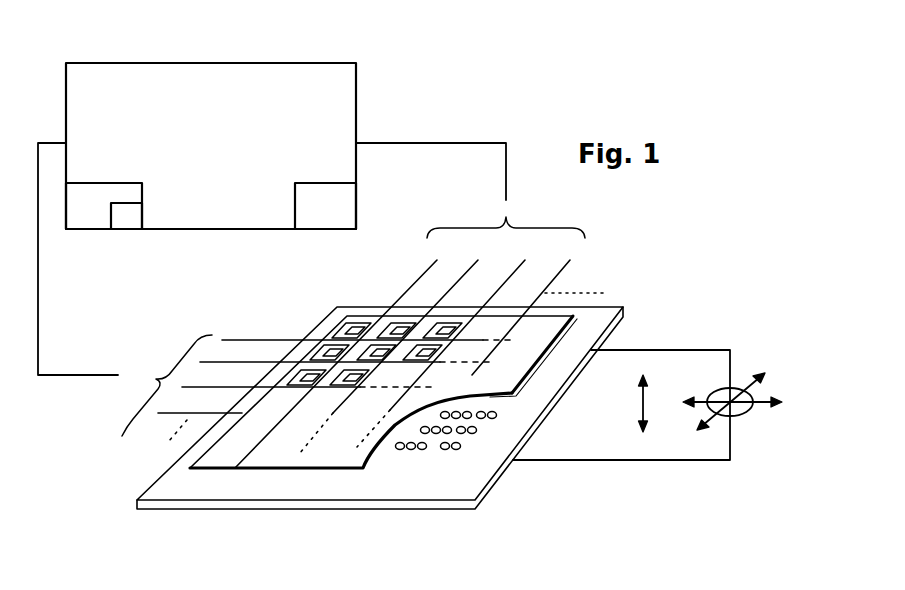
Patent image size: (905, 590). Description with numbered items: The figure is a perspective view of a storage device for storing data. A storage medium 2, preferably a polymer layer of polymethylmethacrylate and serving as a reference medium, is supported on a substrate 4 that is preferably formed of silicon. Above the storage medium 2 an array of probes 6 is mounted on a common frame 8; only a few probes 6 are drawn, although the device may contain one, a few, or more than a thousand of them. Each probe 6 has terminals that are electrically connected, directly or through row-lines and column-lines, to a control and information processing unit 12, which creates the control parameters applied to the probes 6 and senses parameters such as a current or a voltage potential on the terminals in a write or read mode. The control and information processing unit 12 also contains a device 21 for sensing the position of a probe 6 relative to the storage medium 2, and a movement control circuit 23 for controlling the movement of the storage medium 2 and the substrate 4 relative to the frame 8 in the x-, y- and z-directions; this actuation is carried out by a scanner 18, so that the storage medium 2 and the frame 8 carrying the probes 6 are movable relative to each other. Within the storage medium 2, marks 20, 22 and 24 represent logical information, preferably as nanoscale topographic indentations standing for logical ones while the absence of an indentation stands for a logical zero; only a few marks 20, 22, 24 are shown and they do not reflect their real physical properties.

The storage medium 2 is at (163, 481).
The substrate 4 is at (218, 510).
The probes 6 is at (380, 320).
The frame 8 is at (210, 458).
The control and information processing unit 12 is at (121, 62).
The scanner 18 is at (750, 356).
The mark 20 is at (412, 450).
The device for sensing a position of the probe 21 is at (93, 188).
The mark 22 is at (424, 450).
The movement control circuit 23 is at (307, 188).
The mark 24 is at (449, 450).